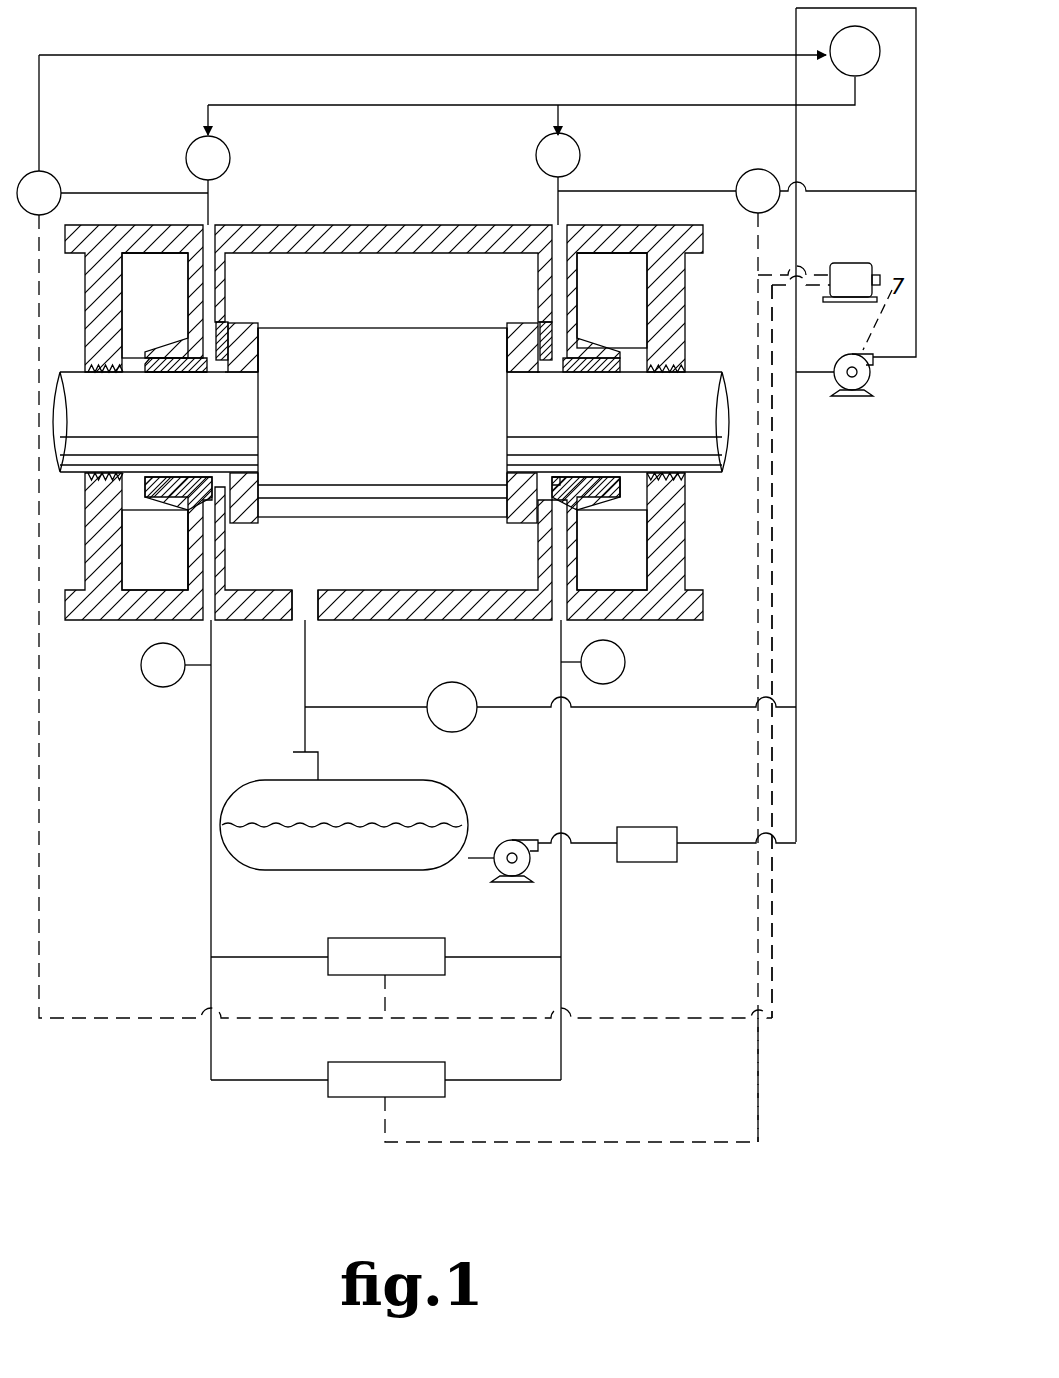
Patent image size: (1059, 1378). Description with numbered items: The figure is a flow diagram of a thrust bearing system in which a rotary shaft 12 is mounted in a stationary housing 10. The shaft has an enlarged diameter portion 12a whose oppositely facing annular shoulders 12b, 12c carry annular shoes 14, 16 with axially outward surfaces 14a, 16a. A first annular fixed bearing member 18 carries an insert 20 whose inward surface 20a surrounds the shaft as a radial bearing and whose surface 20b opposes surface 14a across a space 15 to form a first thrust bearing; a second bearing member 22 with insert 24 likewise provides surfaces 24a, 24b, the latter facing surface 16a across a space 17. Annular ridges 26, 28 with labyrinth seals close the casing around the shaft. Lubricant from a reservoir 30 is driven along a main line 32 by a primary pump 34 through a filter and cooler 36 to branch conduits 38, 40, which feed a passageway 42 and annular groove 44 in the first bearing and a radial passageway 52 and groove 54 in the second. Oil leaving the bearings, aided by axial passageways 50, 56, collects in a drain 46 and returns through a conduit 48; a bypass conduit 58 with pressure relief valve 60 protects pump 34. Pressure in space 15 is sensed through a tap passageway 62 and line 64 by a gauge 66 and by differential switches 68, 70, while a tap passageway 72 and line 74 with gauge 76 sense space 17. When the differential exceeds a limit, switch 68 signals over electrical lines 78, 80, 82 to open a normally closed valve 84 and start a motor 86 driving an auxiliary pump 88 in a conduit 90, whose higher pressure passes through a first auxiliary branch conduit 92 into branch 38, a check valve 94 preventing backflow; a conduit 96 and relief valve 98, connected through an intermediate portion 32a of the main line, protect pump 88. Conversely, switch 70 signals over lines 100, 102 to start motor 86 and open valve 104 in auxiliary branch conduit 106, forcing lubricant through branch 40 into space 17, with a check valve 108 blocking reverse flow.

The stationary housing 10 is at (355, 225).
The rotary shaft 12 is at (72, 478).
The enlarged diameter portion 12a is at (362, 328).
The annular shoulder 12b is at (262, 328).
The annular shoulder 12c is at (506, 325).
The annular shoe 14 is at (265, 360).
The surface 14a is at (257, 490).
The space 15 is at (223, 380).
The annular shoe 16 is at (506, 354).
The surface 16a is at (514, 480).
The space 17 is at (539, 374).
The first annular fixed bearing member 18 is at (190, 300).
The insert 20 is at (169, 358).
The radially inwardly facing surface 20a is at (158, 372).
The axially inwardly facing surface 20b is at (216, 330).
The second annular fixed bearing member 22 is at (572, 310).
The insert 24 is at (580, 477).
The radially inwardly facing surface 24a is at (602, 372).
The axially inwardly facing surface 24b is at (542, 331).
The annular ridge 26 is at (85, 557).
The annular ridge 28 is at (690, 570).
The lubricant reservoir 30 is at (447, 780).
The main line 32 is at (585, 841).
The intermediate portion 32a is at (798, 504).
The primary pump 34 is at (509, 840).
The filter and cooler 36 is at (644, 827).
The branch conduit 38 is at (203, 125).
The branch conduit 40 is at (545, 174).
The passageway 42 is at (204, 276).
The annular groove 44 is at (210, 472).
The drain 46 is at (298, 590).
The conduit 48 is at (305, 680).
The axial passageway 50 is at (188, 574).
The radial passageway 52 is at (567, 276).
The annular groove 54 is at (555, 477).
The axial passageway 56 is at (546, 570).
The bypass conduit 58 is at (692, 707).
The pressure relief valve 60 is at (430, 690).
The first tap passageway 62 is at (198, 539).
The line 64 is at (211, 915).
The pressure gauge 66 is at (158, 679).
The electric pressure differential switch 68 is at (448, 939).
The electric pressure differential switch 70 is at (447, 1065).
The pressure tap passageway 72 is at (572, 534).
The line 74 is at (561, 920).
The pressure gauge 76 is at (625, 662).
The electrical line 78 is at (385, 1001).
The electrical line 80 is at (40, 984).
The electrical line 82 is at (773, 967).
The electrically controlled valve 84 is at (57, 178).
The electric motor 86 is at (860, 263).
The auxiliary pump 88 is at (858, 396).
The conduit 90 is at (810, 372).
The first auxiliary branch conduit 92 is at (513, 55).
The check valve 94 is at (226, 151).
The conduit 96 is at (815, 63).
The pressure relief valve 98 is at (858, 73).
The line 100 is at (508, 1142).
The line 102 is at (810, 275).
The electrically operated valve 104 is at (758, 169).
The auxiliary branch conduit 106 is at (643, 191).
The check valve 108 is at (577, 154).